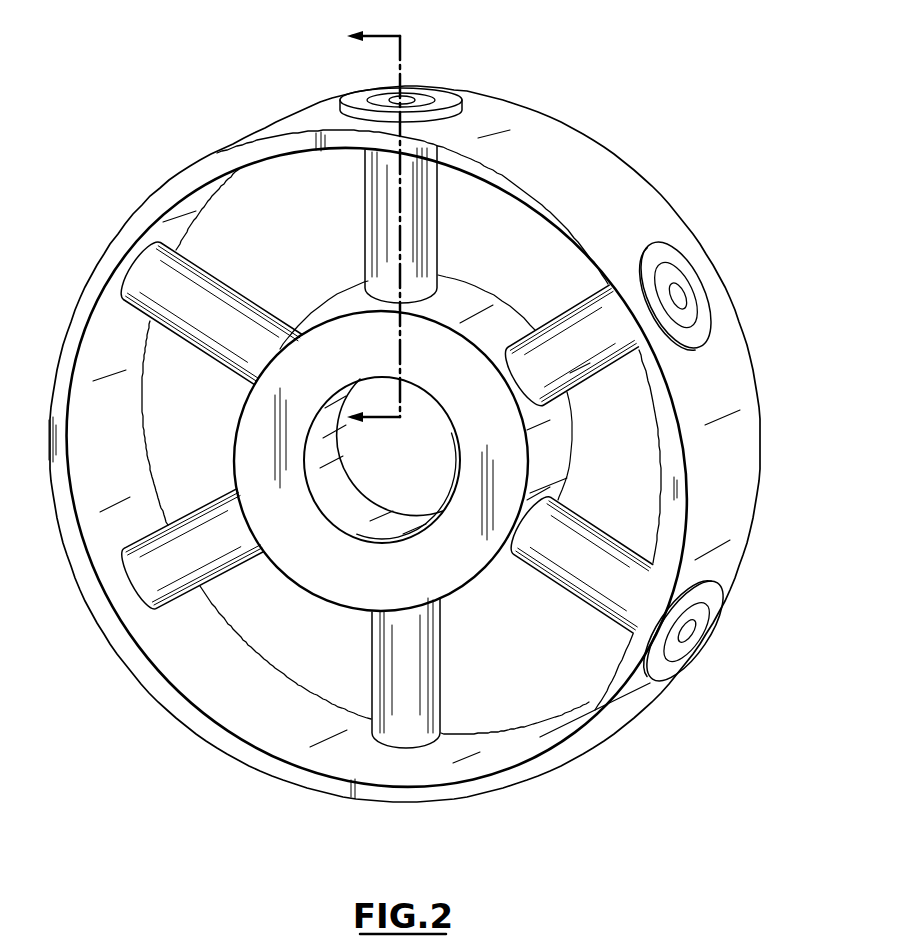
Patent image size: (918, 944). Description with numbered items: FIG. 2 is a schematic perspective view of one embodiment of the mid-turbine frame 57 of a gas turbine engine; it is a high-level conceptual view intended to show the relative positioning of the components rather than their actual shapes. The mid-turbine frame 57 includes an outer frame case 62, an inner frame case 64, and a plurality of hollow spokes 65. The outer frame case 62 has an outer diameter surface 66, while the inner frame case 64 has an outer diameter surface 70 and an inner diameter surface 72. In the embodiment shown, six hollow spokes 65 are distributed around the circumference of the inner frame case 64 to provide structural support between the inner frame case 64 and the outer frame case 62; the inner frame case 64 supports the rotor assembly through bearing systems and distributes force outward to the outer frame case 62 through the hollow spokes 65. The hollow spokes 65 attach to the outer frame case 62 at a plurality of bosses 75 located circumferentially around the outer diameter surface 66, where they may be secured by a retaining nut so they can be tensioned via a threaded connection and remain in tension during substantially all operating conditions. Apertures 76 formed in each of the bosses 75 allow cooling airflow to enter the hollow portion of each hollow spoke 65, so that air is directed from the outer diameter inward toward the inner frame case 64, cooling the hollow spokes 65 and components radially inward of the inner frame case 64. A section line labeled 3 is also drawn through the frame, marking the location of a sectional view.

The mid-turbine frame 57 is at (124, 117).
The outer frame case 62 is at (616, 139).
The inner frame case 64 is at (532, 306).
The hollow spokes 65 is at (413, 214).
The outer diameter surface 66 is at (635, 189).
The outer diameter surface 70 is at (462, 306).
The inner diameter surface 72 is at (393, 507).
The bosses 75 is at (452, 102).
The apertures 76 is at (408, 103).
The section line 3- 3 is at (373, 227).